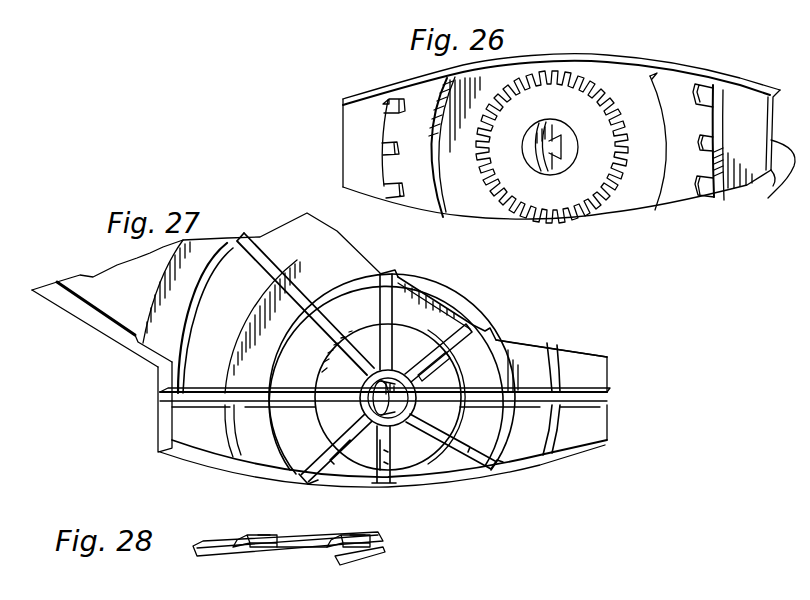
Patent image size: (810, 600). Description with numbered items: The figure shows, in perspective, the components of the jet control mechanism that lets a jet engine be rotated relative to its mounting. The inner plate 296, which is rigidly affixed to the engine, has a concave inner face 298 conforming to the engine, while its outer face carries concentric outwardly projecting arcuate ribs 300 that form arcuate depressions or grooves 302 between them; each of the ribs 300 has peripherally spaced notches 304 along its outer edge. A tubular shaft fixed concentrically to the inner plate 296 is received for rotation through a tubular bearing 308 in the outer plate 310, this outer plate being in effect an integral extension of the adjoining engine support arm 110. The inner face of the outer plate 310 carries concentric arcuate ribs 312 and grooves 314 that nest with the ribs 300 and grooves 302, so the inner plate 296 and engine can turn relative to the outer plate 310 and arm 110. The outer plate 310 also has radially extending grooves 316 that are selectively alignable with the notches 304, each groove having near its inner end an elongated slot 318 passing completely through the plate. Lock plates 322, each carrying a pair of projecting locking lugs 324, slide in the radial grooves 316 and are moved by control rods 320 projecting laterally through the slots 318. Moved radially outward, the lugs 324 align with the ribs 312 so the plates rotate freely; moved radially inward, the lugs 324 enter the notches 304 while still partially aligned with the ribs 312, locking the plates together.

In FIG. 27, the engine support arm 110 is at (85, 310).
In FIG. 26, the inner plate 296 is at (611, 61).
In FIG. 26, the concave inner face 298 is at (776, 190).
In FIG. 26, the arcuate ribs 300 is at (428, 193).
In FIG. 26, the arcuate depressions or grooves 302 is at (722, 193).
In FIG. 26, the notches 304 is at (712, 100).
In FIG. 27, the tubular bearing 308 is at (403, 406).
In FIG. 27, the outer plate 310 is at (475, 324).
In FIG. 27, the arcuate ribs 312 is at (492, 465).
In FIG. 27, the grooves 314 is at (528, 353).
In FIG. 27, the radially extending grooves 316 is at (162, 406).
In FIG. 27, the elongated slot 318 is at (377, 473).
In FIG. 28, the control rod 320 is at (338, 561).
In FIG. 28, the lock plate 322 is at (301, 559).
In FIG. 28, the locking lugs 324 is at (343, 537).